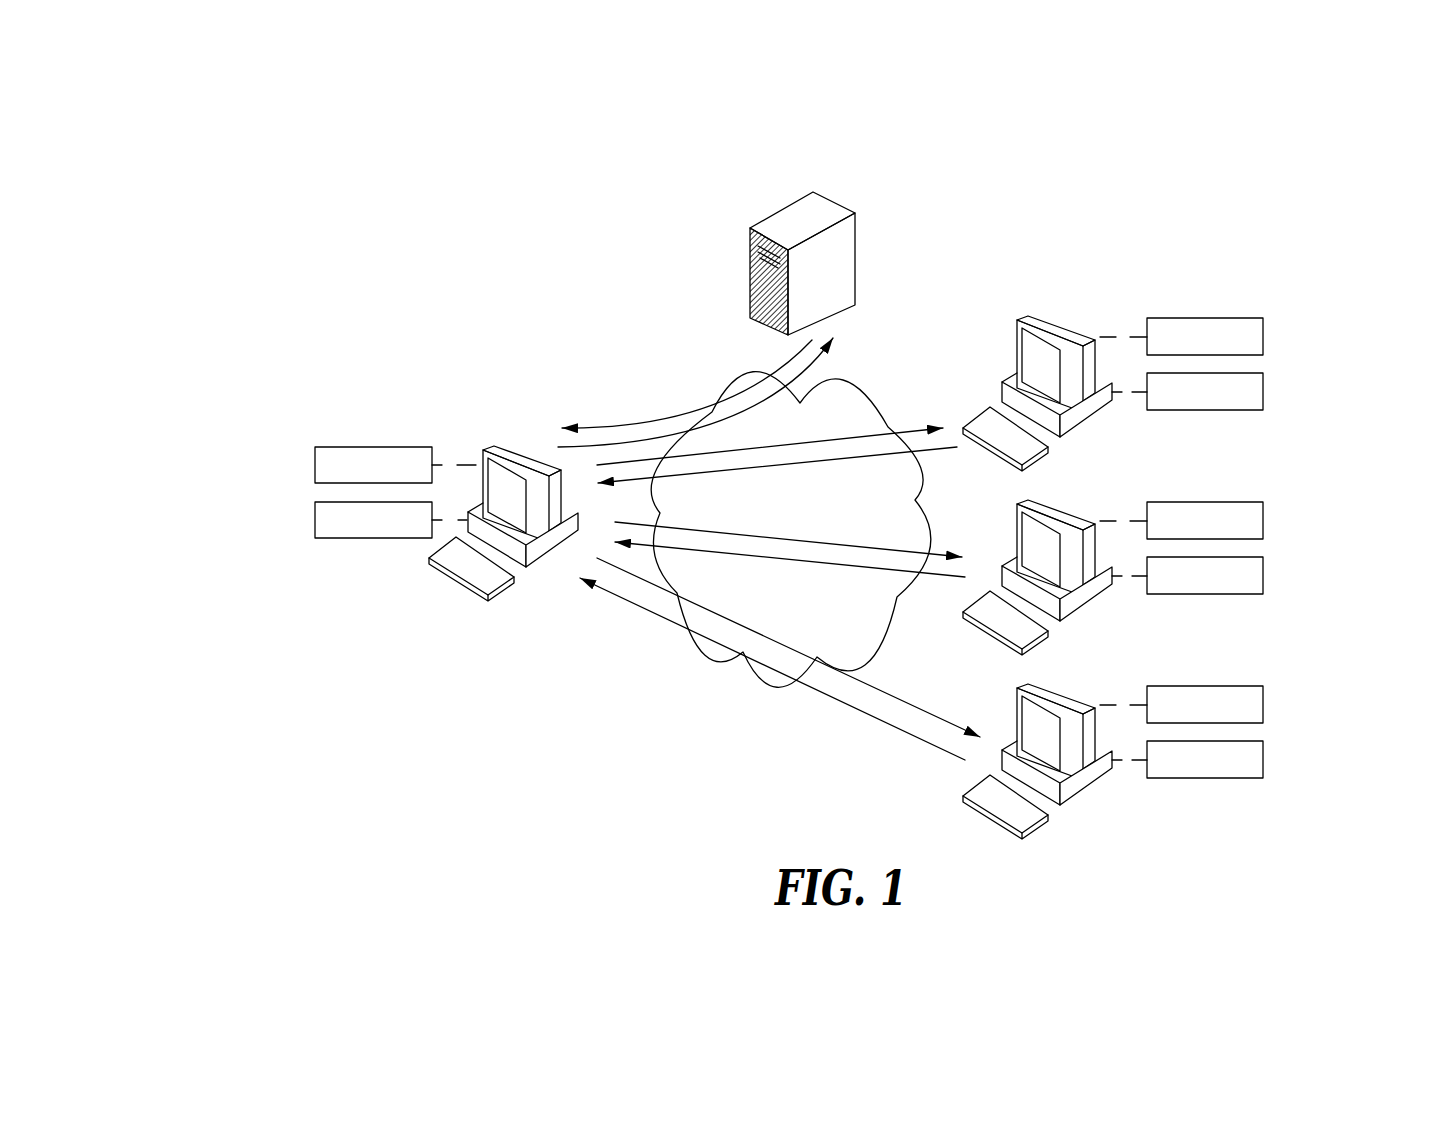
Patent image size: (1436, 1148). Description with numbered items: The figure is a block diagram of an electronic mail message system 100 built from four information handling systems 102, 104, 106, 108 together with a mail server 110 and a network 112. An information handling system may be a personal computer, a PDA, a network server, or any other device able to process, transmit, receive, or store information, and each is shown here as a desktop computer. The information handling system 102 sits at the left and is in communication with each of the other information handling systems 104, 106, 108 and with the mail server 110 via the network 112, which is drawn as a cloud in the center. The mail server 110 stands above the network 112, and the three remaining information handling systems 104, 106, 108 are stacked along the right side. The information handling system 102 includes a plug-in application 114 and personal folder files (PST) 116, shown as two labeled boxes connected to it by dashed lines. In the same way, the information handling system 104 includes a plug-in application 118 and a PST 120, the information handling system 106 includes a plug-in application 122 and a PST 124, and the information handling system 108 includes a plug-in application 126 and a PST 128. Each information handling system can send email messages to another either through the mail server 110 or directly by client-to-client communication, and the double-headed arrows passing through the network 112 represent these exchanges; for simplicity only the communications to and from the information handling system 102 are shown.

The electronic mail message system 100 is at (1024, 186).
The information handling system 102 is at (503, 448).
The information handling system 104 is at (1053, 322).
The information handling system 106 is at (1053, 506).
The information handling system 108 is at (1053, 690).
The mail server 110 is at (788, 207).
The network 112 is at (700, 655).
The plug-in application 114 is at (315, 463).
The personal folder files (PST) 116 is at (315, 518).
The plug-in application 118 is at (1263, 340).
The PST 120 is at (1263, 395).
The plug-in application 122 is at (1263, 524).
The PST 124 is at (1263, 579).
The plug-in application 126 is at (1263, 708).
The PST 128 is at (1263, 763).